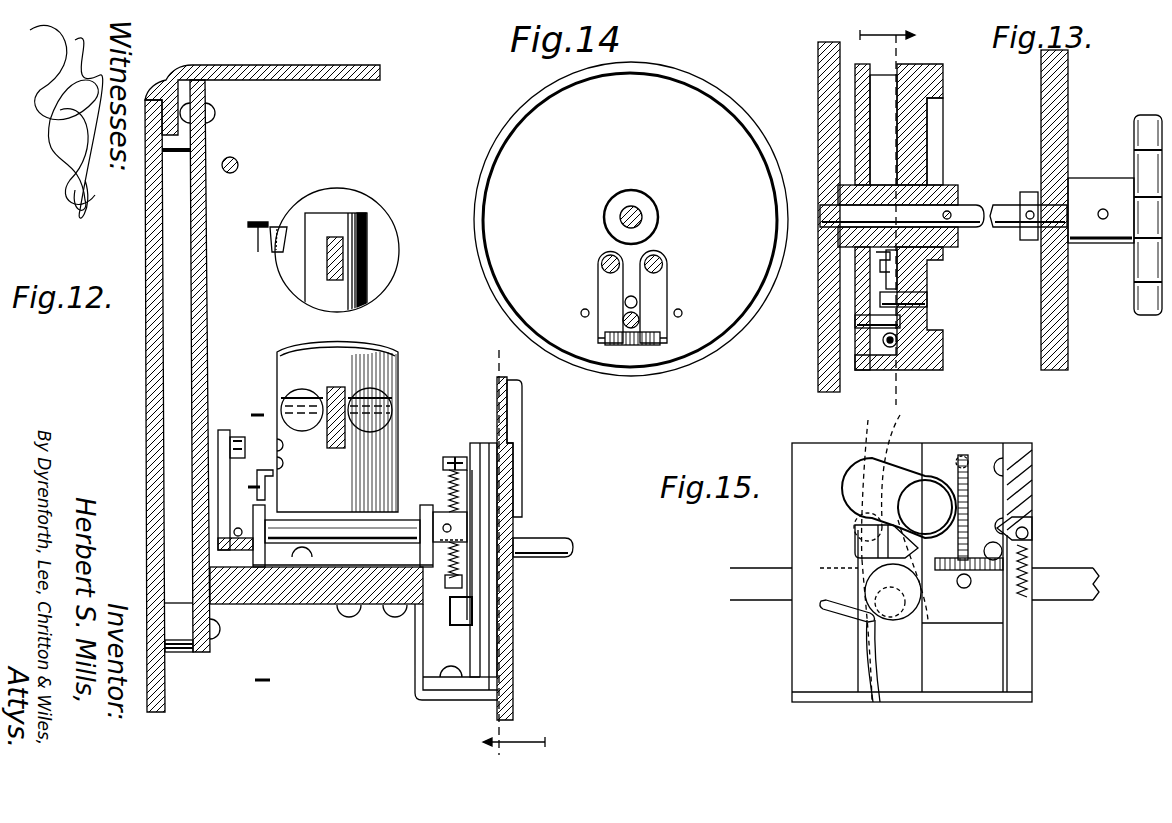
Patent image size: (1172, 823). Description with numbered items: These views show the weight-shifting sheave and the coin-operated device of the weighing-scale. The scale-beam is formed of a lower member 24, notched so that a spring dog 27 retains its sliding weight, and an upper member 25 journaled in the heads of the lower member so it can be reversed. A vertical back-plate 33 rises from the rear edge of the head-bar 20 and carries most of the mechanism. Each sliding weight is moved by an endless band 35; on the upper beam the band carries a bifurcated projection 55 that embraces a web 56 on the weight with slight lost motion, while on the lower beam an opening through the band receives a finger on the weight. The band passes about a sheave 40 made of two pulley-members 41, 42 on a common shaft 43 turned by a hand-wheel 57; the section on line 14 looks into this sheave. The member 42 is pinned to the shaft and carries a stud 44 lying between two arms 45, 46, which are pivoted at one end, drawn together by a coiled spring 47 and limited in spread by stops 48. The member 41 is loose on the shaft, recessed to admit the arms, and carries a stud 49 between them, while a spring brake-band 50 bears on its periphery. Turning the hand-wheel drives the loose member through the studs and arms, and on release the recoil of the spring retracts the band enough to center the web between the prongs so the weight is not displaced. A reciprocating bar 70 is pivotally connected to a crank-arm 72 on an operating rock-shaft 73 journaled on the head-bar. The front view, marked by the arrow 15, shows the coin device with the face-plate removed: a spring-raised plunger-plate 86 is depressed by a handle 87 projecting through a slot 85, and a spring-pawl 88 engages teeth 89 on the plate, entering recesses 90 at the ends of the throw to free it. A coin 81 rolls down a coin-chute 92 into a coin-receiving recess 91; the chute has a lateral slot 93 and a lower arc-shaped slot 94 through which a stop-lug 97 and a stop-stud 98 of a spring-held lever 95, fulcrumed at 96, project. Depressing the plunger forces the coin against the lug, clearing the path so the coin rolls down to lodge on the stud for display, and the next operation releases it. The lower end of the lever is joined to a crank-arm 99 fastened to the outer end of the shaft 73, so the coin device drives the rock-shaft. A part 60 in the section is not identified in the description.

In FIG. 13, the section line 14 is at (887, 207).
In FIG. 12, the front-view indicator 15 is at (514, 566).
In FIG. 12, the head-bar 20 is at (305, 598).
In FIG. 15, the head-bar 20 is at (1097, 585).
In FIG. 12, the lower scale-beam member 24 is at (392, 410).
In FIG. 12, the upper scale-beam member 25 is at (343, 252).
In FIG. 12, the spring dog 27 is at (336, 385).
In FIG. 12, the back-plate 33 is at (192, 332).
In FIG. 13, the back-plate 33 is at (818, 125).
In FIG. 12, the endless band 35 is at (356, 212).
In FIG. 13, the endless band 35 is at (925, 68).
In FIG. 13, the companion-sheave 40 is at (919, 215).
In FIG. 13, the pulley-member 41 is at (857, 95).
In FIG. 14, the pulley-member 42 is at (973, 110).
In FIG. 14, the shaft 43 is at (642, 210).
In FIG. 13, the shaft 43 is at (1003, 205).
In FIG. 14, the stud 44 is at (631, 296).
In FIG. 13, the stud 44 is at (903, 302).
In FIG. 14, the arm 45 is at (660, 285).
In FIG. 14, the arm 46 is at (598, 285).
In FIG. 13, the arm 46 is at (893, 288).
In FIG. 14, the coiled spring 47 is at (636, 346).
In FIG. 13, the coiled spring 47 is at (897, 340).
In FIG. 14, the stops 48 is at (580, 312).
In FIG. 14, the stud 49 is at (631, 320).
In FIG. 13, the stud 49 is at (862, 322).
In FIG. 12, the spring brake-band 50 is at (262, 388).
In FIG. 13, the spring brake-band 50 is at (867, 62).
In FIG. 12, the bifurcated projection 55 is at (280, 232).
In FIG. 12, the web 56 is at (388, 272).
In FIG. 13, the hand-wheel 57 is at (1140, 118).
In FIG. 12, the pin 60 is at (236, 163).
In FIG. 12, the bar 70 is at (228, 432).
In FIG. 12, the crank-arm 72 is at (220, 443).
In FIG. 12, the operating rock-shaft 73 is at (400, 524).
In FIG. 15, the operating rock-shaft 73 is at (872, 489).
In FIG. 15, the coin 81 is at (955, 648).
In FIG. 12, the slot 85 is at (515, 431).
In FIG. 15, the plunger-plate 86 is at (995, 617).
In FIG. 12, the handle 87 is at (556, 541).
In FIG. 15, the handle 87 is at (991, 543).
In FIG. 15, the spring-pawl 88 is at (1030, 530).
In FIG. 15, the teeth 89 is at (1012, 495).
In FIG. 15, the recesses 90 is at (1005, 468).
In FIG. 15, the coin-receiving recess 91 is at (928, 480).
In FIG. 15, the coin-chute 92 is at (848, 488).
In FIG. 12, the slot 93 is at (460, 626).
In FIG. 15, the slot 93 is at (857, 545).
In FIG. 15, the slot 94 is at (825, 608).
In FIG. 12, the lever 95 is at (475, 607).
In FIG. 15, the lever 95 is at (862, 548).
In FIG. 15, the fulcrum 96 is at (891, 507).
In FIG. 15, the stop-lug 97 is at (925, 560).
In FIG. 15, the stop-stud 98 is at (869, 676).
In FIG. 15, the crank-arm 99 is at (831, 569).